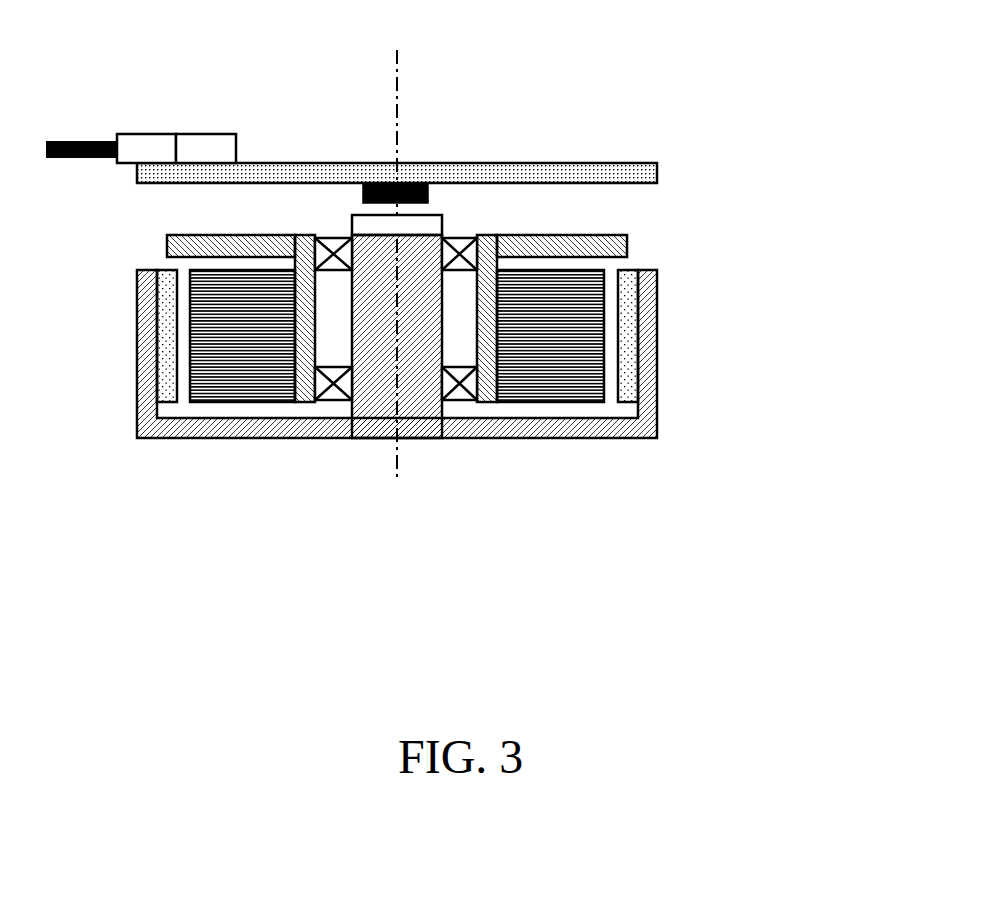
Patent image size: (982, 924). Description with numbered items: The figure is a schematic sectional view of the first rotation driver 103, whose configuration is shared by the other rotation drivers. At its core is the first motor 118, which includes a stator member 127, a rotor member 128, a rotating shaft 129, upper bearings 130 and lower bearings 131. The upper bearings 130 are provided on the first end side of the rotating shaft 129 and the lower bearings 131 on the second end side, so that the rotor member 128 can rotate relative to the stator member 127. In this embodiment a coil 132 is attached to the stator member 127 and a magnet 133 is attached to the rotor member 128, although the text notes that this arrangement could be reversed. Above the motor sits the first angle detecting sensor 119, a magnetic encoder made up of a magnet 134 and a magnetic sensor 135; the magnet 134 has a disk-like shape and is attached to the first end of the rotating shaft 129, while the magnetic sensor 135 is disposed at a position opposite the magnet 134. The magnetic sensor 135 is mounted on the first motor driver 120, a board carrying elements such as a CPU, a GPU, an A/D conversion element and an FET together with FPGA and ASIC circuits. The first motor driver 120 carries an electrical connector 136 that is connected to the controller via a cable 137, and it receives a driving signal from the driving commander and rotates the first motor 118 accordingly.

The first rotation driver 103 is at (547, 607).
The first motor 118 is at (838, 200).
The first angle detecting sensor 119 is at (430, 60).
The first motor driver 120 is at (635, 168).
The stator member 127 is at (627, 233).
The rotor member 128 is at (647, 338).
The rotating shaft 129 is at (370, 430).
The upper bearings 130 is at (330, 250).
The lower bearings 131 is at (458, 392).
The coil 132 is at (600, 282).
The magnet 133 is at (627, 380).
The magnet 134 is at (427, 222).
The magnetic sensor 135 is at (397, 180).
The electrical connector 136 is at (213, 145).
The cable 137 is at (147, 147).